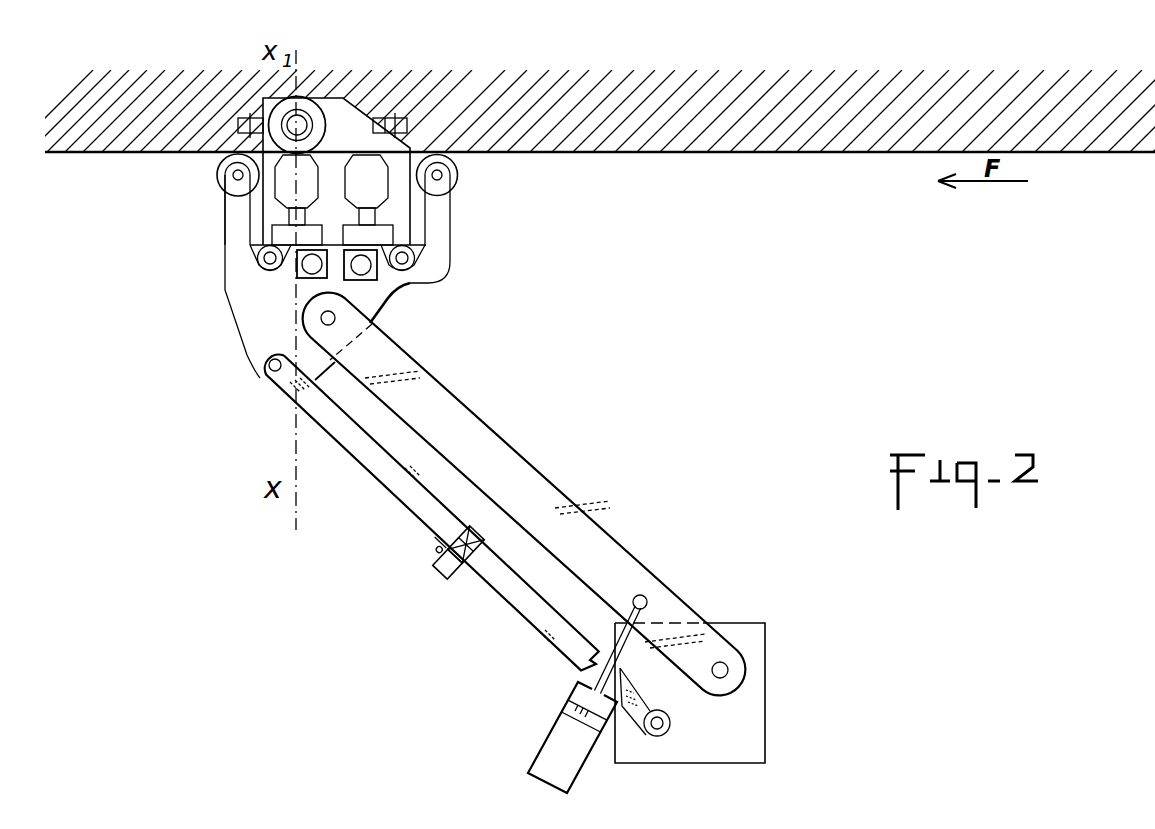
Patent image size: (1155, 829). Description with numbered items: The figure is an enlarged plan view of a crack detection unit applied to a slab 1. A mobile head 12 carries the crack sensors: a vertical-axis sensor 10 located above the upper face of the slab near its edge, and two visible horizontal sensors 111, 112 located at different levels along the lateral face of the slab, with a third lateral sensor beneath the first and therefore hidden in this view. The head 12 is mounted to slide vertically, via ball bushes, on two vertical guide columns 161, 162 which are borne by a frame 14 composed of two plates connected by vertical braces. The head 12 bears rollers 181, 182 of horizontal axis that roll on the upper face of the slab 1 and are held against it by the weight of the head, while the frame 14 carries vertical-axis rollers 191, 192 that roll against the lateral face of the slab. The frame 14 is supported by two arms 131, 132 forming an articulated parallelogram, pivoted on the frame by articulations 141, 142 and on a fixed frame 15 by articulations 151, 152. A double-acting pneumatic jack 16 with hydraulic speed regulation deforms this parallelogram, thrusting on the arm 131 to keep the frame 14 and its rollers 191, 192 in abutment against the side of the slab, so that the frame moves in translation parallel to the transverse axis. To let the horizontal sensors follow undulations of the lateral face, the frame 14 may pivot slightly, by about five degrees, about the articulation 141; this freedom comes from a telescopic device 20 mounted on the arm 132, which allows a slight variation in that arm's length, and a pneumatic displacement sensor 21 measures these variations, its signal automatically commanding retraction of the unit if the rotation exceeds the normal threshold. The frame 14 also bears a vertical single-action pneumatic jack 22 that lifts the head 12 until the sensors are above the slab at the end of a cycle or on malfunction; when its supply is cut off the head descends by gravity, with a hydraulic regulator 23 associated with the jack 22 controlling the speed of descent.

The slab 1 is at (731, 120).
The vertical-axis sensor 10 is at (298, 120).
The head 12 is at (342, 123).
The roller 181 is at (403, 117).
The roller 182 is at (252, 124).
The vertical-axis roller 191 is at (451, 178).
The vertical-axis roller 192 is at (225, 182).
The horizontal sensor 111 is at (369, 194).
The horizontal sensor 112 is at (299, 194).
The guide column 161 is at (414, 264).
The guide column 162 is at (257, 259).
The pneumatic jack 22 is at (298, 272).
The hydraulic regulator 23 is at (398, 292).
The frame 14 is at (254, 327).
The articulation 141 is at (336, 320).
The articulation 142 is at (263, 371).
The arm 131 is at (487, 452).
The arm 132 is at (407, 480).
The telescopic device 20 is at (448, 556).
The sensor 21 is at (460, 580).
The fixed frame 15 is at (740, 742).
The articulation 151 is at (730, 670).
The articulation 152 is at (657, 737).
The jack 16 is at (560, 746).